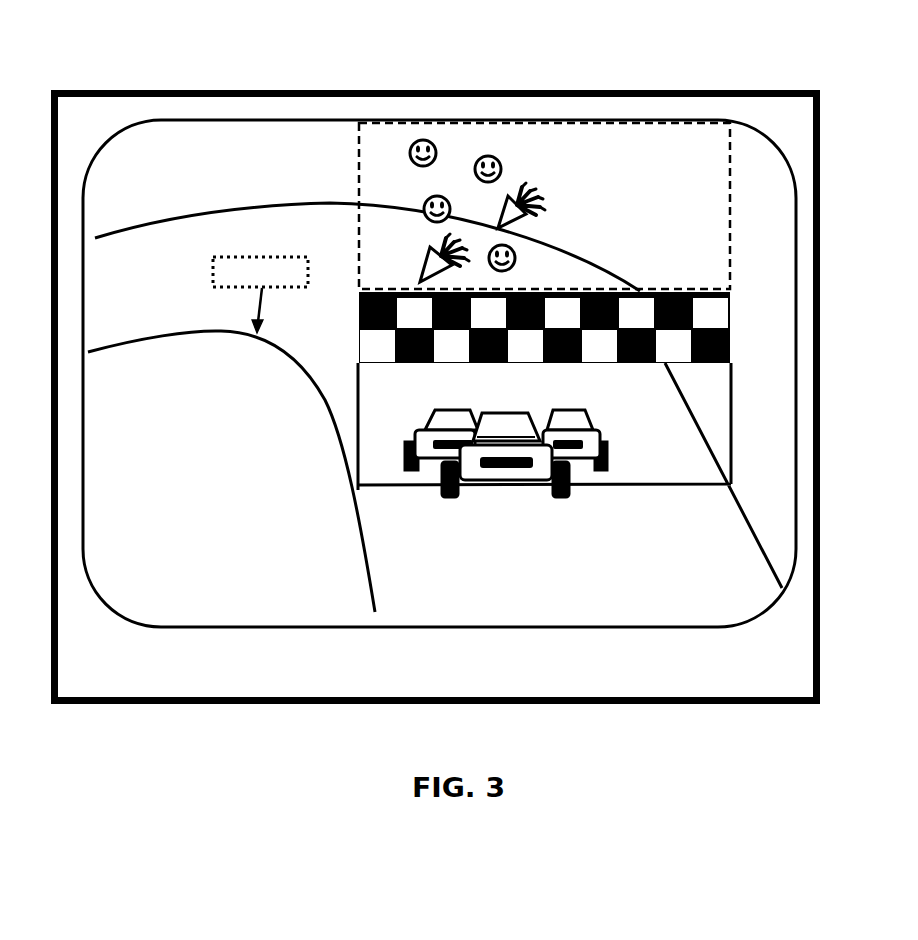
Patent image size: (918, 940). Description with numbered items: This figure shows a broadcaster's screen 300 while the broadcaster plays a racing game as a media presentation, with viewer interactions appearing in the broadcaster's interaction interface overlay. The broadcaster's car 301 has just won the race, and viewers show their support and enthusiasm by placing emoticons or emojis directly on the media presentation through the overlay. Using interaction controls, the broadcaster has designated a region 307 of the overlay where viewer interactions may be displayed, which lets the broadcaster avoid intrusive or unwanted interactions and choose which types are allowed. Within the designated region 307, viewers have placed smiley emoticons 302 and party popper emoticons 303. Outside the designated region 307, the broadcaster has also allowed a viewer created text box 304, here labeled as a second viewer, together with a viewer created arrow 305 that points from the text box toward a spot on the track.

The display screen showing rendered scene 300 is at (205, 84).
The broadcaster's car 301 is at (497, 427).
The smiley emoticon 302 is at (484, 156).
The party popper emoticon 303 is at (527, 196).
The viewer created text box 304 is at (300, 257).
The viewer created arrow 305 is at (257, 335).
The designated region 307 is at (615, 123).